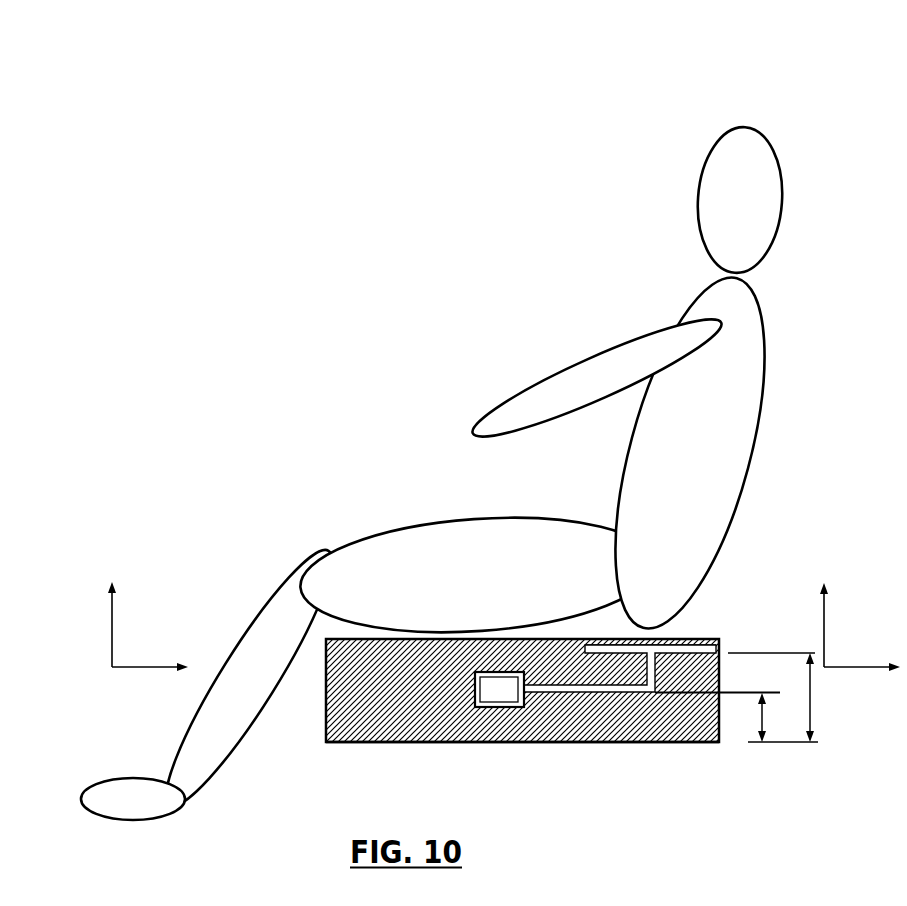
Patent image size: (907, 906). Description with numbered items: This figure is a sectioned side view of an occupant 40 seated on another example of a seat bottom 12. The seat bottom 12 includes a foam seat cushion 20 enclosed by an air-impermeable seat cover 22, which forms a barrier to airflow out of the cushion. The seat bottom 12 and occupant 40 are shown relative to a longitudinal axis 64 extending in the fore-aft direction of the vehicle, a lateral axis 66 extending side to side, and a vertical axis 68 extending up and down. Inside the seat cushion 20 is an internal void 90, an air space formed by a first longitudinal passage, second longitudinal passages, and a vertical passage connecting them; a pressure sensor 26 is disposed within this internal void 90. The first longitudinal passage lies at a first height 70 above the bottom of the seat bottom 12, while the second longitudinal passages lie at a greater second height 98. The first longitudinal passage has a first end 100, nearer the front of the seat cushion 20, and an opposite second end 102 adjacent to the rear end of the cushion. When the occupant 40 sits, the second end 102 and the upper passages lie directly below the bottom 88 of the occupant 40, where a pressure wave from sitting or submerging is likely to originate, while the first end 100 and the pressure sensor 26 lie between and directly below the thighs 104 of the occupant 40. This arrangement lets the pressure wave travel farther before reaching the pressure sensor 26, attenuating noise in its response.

The seat bottom 12 is at (535, 660).
The seat cushion 20 is at (375, 697).
The seat cover 22 is at (432, 743).
The pressure sensor 26 is at (503, 690).
The occupant 40 is at (753, 112).
The longitudinal axis 64 is at (147, 667).
The lateral axis 66 is at (825, 615).
The vertical axis 68 is at (113, 617).
The first height 70 is at (762, 714).
The bottom of the occupant 88 is at (670, 623).
The internal void 90 is at (408, 660).
The second height 98 is at (812, 694).
The first end 100 is at (472, 707).
The second end 102 is at (652, 692).
The thighs 104 is at (453, 567).